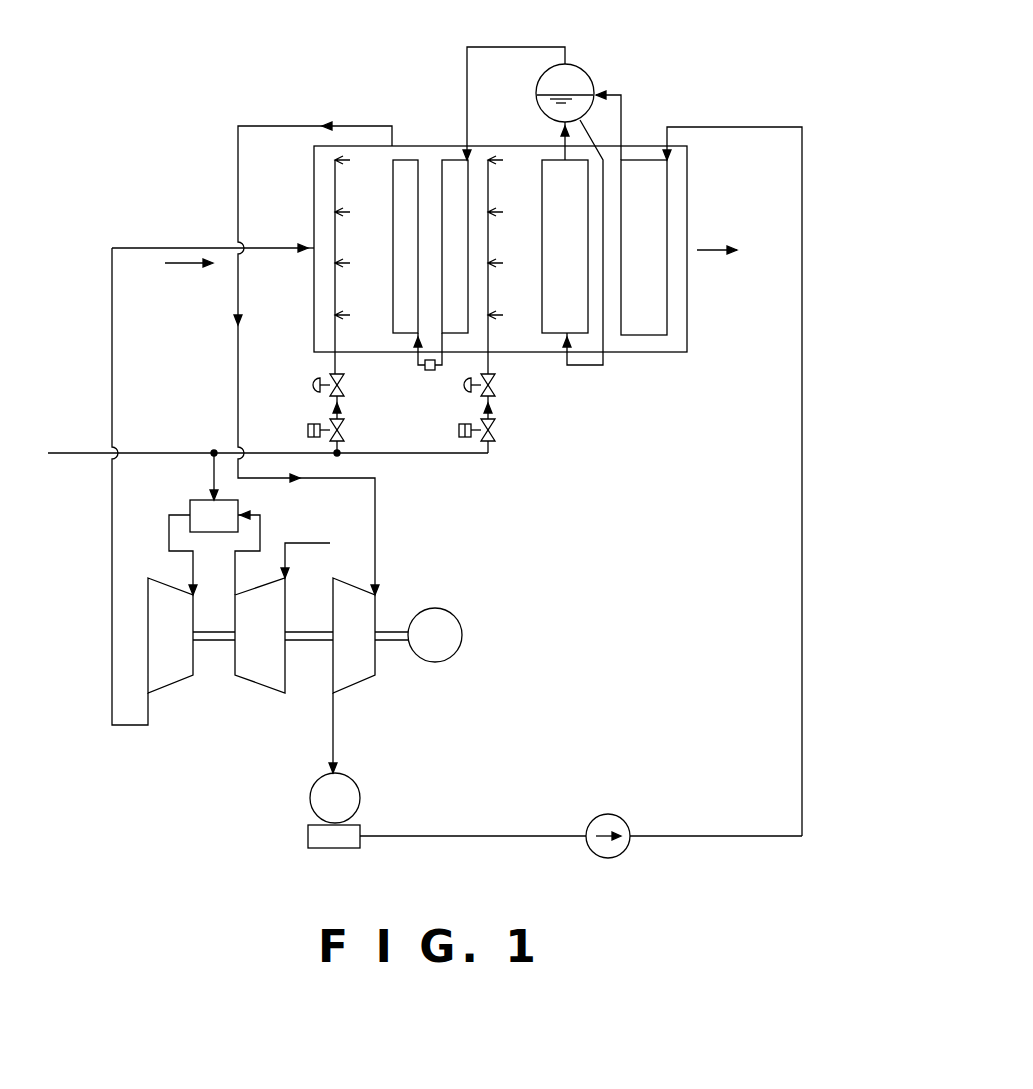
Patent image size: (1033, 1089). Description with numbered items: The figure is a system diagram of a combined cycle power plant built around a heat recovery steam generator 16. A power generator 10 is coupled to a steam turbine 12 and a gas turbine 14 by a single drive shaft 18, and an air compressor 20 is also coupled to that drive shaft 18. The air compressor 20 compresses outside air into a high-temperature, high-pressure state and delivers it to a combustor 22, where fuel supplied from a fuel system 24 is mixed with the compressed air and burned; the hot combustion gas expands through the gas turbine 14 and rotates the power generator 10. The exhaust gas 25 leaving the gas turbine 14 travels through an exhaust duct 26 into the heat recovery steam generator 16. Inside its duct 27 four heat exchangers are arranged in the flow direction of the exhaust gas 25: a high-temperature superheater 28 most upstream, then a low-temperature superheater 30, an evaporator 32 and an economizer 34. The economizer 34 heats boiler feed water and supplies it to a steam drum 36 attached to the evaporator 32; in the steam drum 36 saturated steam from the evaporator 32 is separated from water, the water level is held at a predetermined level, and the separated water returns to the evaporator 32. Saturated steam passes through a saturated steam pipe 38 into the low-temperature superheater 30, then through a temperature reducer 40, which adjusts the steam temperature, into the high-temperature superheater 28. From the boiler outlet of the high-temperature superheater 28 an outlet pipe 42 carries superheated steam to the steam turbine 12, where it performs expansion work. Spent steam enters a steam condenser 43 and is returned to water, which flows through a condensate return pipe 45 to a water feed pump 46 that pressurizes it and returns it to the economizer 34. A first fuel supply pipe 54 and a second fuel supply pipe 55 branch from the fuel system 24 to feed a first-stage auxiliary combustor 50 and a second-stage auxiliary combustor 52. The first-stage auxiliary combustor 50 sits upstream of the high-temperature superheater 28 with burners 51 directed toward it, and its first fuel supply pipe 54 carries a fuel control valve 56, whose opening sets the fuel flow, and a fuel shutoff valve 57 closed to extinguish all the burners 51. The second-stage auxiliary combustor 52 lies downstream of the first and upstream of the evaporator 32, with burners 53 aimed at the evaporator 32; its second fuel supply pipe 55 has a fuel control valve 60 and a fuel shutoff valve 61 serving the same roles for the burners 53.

The power generator 10 is at (452, 614).
The steam turbine 12 is at (360, 685).
The gas turbine 14 is at (158, 578).
The heat recovery steam generator 16 is at (632, 362).
The drive shaft 18 is at (303, 630).
The air compressor 20 is at (258, 685).
The combustor 22 is at (198, 500).
The fuel system 24 is at (73, 452).
The exhaust gas 25 is at (188, 268).
The exhaust duct 26 is at (112, 350).
The duct 27 is at (415, 146).
The high-temperature superheater 28 is at (393, 235).
The low-temperature superheater 30 is at (452, 160).
The evaporator 32 is at (542, 238).
The economizer 34 is at (668, 192).
The steam drum 36 is at (583, 72).
The saturated steam pipe 38 is at (497, 47).
The temperature reducer 40 is at (430, 372).
The outlet pipe 42 is at (302, 126).
The steam condenser 43 is at (350, 780).
The condensate return pipe 45 is at (470, 833).
The water feed pump 46 is at (614, 814).
The first-stage auxiliary combustor 50 is at (337, 172).
The burners 51 is at (338, 272).
The second-stage auxiliary combustor 52 is at (490, 172).
The burners 53 is at (490, 272).
The first fuel supply pipe 54 is at (330, 362).
The second fuel supply pipe 55 is at (490, 362).
The fuel control valve 56 is at (345, 392).
The fuel shutoff valve 57 is at (308, 430).
The fuel control valve 60 is at (463, 385).
The fuel shutoff valve 61 is at (497, 438).